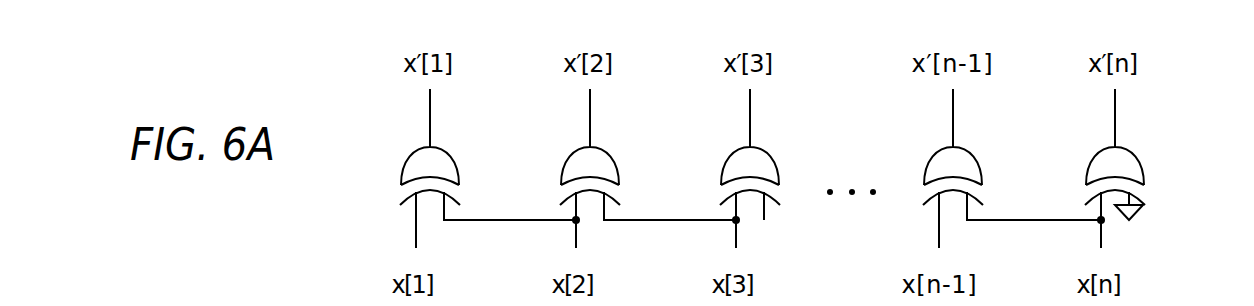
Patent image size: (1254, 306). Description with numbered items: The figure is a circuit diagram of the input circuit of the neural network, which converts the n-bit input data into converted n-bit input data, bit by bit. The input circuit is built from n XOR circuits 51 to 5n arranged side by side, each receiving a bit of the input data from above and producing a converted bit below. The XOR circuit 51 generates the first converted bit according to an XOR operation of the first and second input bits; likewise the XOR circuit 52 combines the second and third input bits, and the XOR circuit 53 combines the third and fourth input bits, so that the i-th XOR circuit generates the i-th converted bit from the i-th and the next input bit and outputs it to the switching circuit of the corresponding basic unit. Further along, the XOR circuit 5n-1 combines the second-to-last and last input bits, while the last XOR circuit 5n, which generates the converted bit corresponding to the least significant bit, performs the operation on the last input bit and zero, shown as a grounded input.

The XOR circuit 51 is at (445, 149).
The XOR circuit 52 is at (605, 149).
The XOR circuit 53 is at (765, 149).
The XOR circuit 5n-1 is at (968, 149).
The XOR circuit 5n is at (1130, 149).